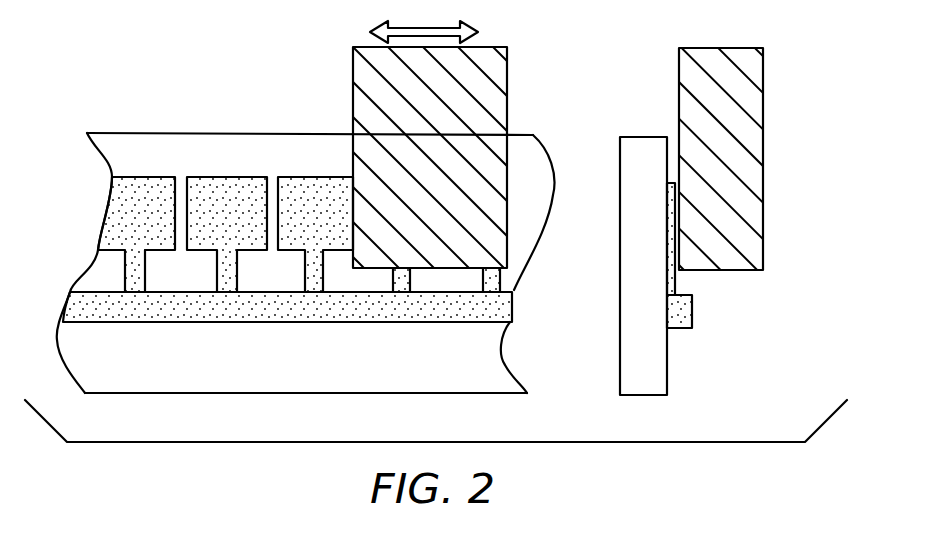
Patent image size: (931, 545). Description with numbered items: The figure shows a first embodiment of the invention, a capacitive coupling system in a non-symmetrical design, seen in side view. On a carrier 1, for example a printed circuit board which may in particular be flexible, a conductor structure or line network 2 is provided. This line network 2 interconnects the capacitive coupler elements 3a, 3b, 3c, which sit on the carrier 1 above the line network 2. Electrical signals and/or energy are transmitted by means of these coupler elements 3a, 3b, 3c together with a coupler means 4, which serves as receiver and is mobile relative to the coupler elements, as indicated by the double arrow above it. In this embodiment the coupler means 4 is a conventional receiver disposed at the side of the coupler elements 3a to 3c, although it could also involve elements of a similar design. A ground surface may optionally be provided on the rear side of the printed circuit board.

The carrier 1 is at (405, 378).
The line network 2 is at (512, 307).
The capacitive coupler element 3a is at (114, 205).
The capacitive coupler element 3b is at (243, 177).
The capacitive coupler element 3c is at (335, 177).
The coupler means 4 is at (355, 102).